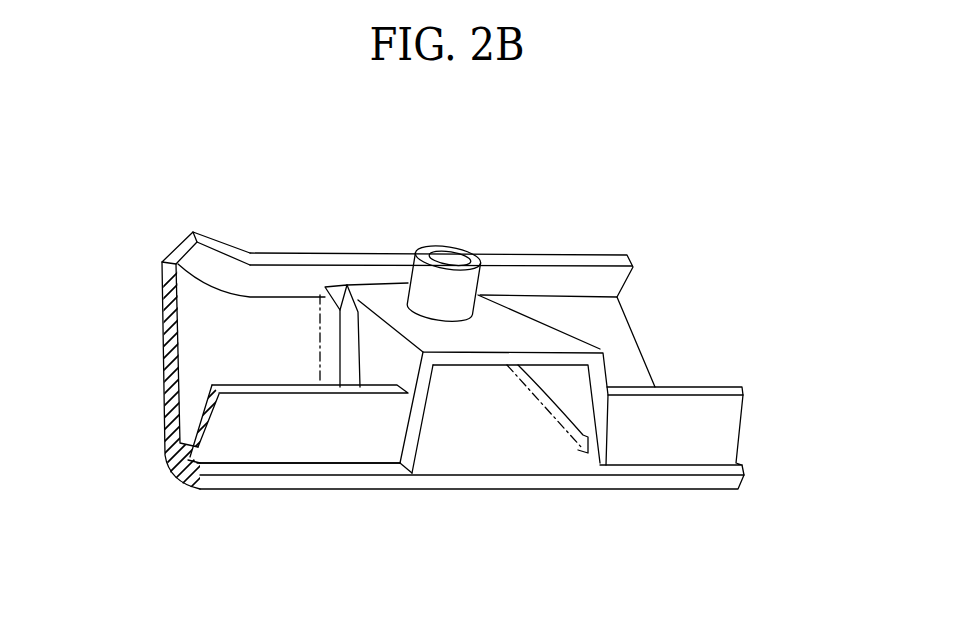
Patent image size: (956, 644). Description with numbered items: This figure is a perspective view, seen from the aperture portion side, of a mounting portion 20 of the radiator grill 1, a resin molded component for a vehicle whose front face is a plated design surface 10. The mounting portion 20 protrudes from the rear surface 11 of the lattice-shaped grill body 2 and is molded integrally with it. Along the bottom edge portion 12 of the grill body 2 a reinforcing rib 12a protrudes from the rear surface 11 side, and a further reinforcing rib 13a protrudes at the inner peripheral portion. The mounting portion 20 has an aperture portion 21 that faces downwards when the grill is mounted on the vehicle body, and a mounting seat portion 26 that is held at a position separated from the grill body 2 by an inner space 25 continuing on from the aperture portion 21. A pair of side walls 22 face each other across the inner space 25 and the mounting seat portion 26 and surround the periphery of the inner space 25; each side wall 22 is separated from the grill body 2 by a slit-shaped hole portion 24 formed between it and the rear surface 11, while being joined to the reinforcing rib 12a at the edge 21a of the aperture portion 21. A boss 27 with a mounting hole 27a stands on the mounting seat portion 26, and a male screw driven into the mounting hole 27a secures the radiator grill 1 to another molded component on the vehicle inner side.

The radiator grill 1 is at (733, 236).
The grill body 2 is at (616, 254).
The design surface 10 is at (160, 393).
The rear surface 11 is at (235, 340).
The bottom edge portion 12 is at (700, 478).
The reinforcing rib 12a is at (710, 403).
The reinforcing rib 13a is at (208, 262).
The mounting portion 20 is at (581, 333).
The aperture portion 21 is at (463, 445).
The edge of the aperture portion 21a is at (413, 430).
The side walls 22 is at (381, 345).
The hole portions 24 is at (323, 340).
The inner space 25 is at (459, 422).
The mounting seat portion 26 is at (517, 320).
The boss 27 is at (483, 278).
The mounting hole 27a is at (448, 262).